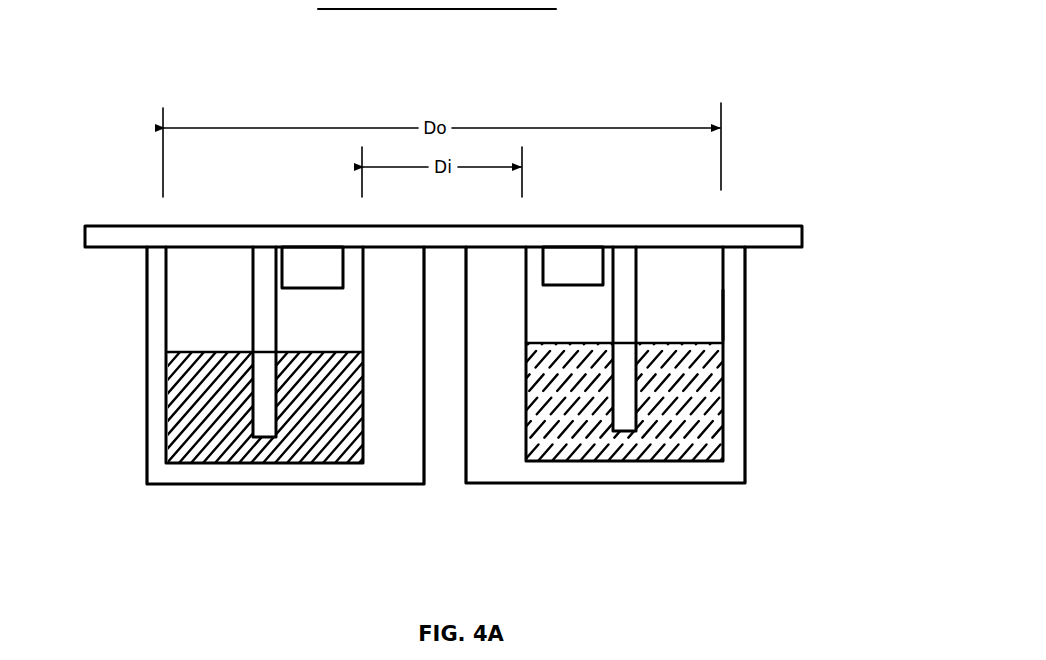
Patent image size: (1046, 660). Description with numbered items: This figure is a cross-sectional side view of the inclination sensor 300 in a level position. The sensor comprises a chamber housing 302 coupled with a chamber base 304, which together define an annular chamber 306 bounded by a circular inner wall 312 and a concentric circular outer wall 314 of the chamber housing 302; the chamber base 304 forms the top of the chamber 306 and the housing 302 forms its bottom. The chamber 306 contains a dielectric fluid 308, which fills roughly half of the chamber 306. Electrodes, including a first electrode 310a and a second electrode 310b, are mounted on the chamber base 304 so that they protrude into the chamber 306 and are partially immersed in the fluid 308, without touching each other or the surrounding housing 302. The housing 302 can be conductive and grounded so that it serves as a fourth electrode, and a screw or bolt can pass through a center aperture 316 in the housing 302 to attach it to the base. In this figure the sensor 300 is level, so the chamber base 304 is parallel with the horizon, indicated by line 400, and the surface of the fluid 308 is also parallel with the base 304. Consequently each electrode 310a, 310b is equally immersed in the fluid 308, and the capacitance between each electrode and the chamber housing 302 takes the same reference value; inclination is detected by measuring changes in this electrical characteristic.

The inclination sensor 300 is at (771, 94).
The chamber housing 302 is at (748, 386).
The chamber base 304 is at (763, 226).
The chamber 306 is at (442, 267).
The fluid 308 is at (675, 423).
The first electrode 310a is at (252, 289).
The second electrode 310b is at (637, 262).
The inner wall 312 is at (527, 311).
The outer wall 314 is at (723, 312).
The center aperture 316 is at (447, 479).
The horizon line 400 is at (437, 21).